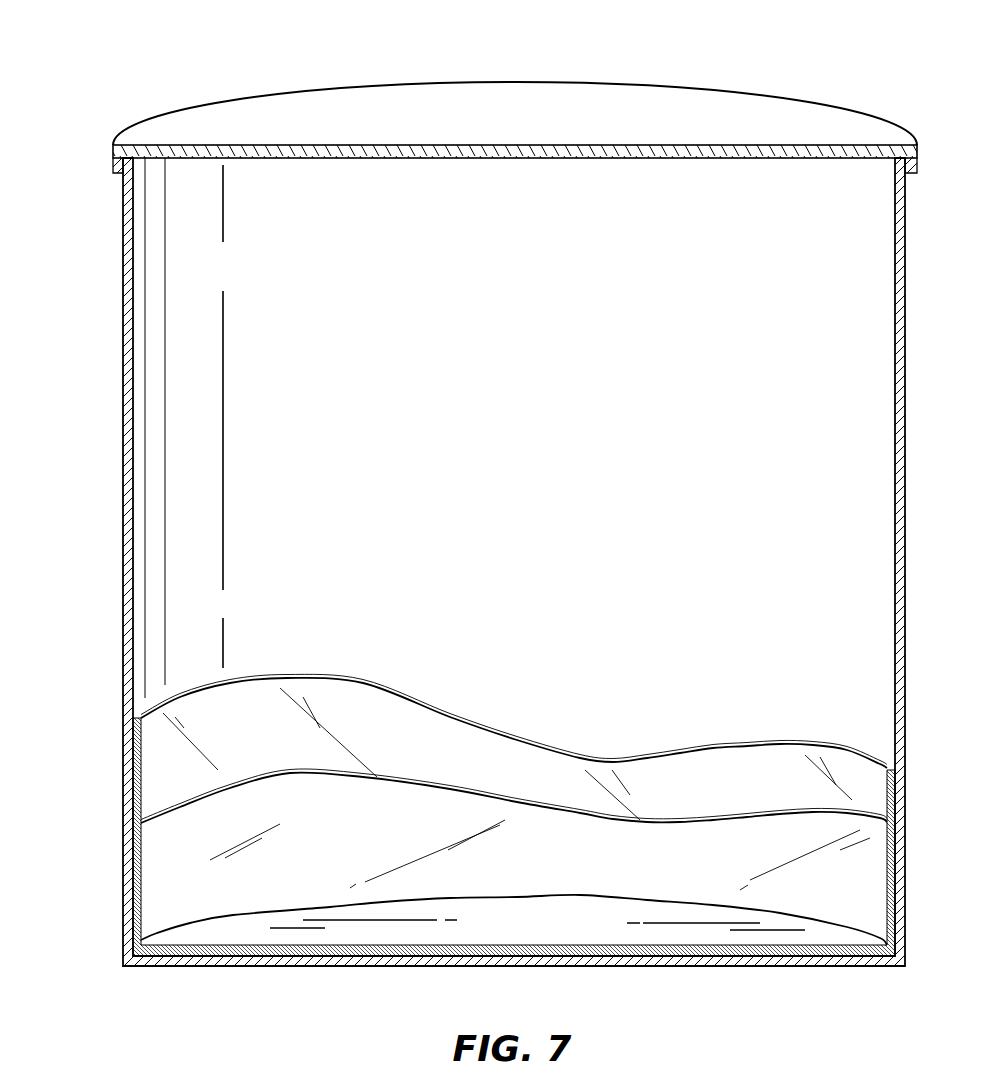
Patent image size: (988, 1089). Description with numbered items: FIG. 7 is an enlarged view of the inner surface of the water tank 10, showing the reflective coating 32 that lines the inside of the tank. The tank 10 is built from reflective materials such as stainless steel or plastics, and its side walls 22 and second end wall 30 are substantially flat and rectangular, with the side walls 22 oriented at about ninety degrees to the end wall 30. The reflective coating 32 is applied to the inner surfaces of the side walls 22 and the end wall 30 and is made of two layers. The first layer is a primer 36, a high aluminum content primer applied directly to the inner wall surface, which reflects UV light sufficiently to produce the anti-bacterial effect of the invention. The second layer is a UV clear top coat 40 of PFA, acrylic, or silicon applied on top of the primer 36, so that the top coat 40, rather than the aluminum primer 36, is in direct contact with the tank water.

The water tank 10 is at (820, 76).
The side walls 22 is at (203, 526).
The second end wall 30 is at (373, 929).
The reflective coating 32 is at (80, 690).
The primer 36 is at (172, 746).
The UV clear top coat 40 is at (172, 864).